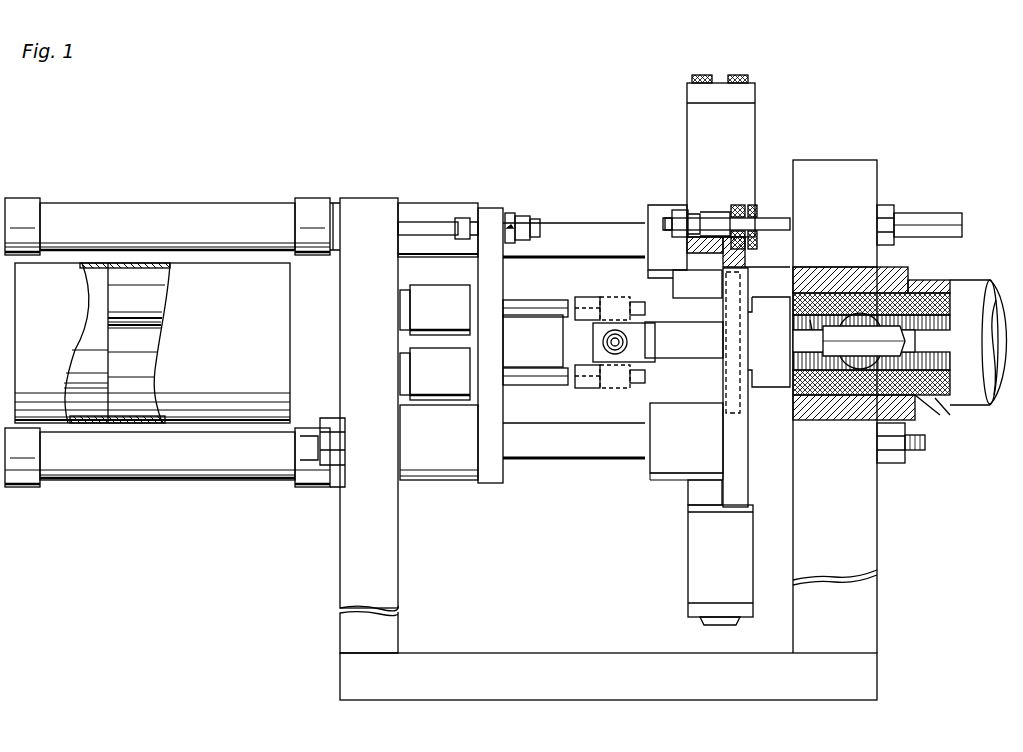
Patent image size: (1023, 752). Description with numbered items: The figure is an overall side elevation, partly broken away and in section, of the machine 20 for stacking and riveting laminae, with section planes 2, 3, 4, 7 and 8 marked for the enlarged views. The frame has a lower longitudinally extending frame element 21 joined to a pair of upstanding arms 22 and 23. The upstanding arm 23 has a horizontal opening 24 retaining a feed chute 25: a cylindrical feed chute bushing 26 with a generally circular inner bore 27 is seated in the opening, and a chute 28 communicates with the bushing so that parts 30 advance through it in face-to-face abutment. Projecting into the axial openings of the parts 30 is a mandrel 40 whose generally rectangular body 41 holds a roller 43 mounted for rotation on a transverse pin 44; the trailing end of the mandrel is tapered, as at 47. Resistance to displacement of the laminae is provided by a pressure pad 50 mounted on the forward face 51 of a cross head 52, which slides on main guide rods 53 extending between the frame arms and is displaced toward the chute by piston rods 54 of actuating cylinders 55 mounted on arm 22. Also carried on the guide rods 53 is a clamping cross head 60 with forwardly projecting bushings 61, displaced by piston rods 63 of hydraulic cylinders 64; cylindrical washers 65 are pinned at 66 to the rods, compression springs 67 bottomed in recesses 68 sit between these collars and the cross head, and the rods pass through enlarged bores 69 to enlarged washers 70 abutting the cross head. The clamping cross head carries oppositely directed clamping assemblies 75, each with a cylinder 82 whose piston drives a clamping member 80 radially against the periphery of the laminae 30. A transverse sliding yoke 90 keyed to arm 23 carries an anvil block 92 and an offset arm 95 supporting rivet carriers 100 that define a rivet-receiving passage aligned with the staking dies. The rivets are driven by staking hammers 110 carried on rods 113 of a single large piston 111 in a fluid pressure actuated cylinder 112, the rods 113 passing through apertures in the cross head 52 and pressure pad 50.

The machine 20 is at (340, 196).
The lower longitudinally extending frame element 21 is at (514, 662).
The upstanding arm 22 is at (385, 583).
The upstanding arm 23 is at (877, 528).
The horizontal opening 24 is at (838, 398).
The feed chute 25 is at (922, 272).
The feed chute bushing 26 is at (850, 400).
The inner bore 27 is at (915, 278).
The chute 28 is at (950, 280).
The parts 30 is at (950, 415).
The mandrel 40 is at (915, 348).
The mandrel body 41 is at (805, 340).
The roller 43 is at (812, 326).
The transverse pin 44 is at (864, 341).
The tapered trailing end 47 is at (905, 330).
The pressure pad 50 is at (545, 362).
The forward face 51 is at (503, 280).
The cross head 52 is at (490, 205).
The main guide rods 53 is at (615, 225).
The piston rods 54 is at (440, 210).
The actuating cylinders 55 is at (222, 198).
The clamping cross head 60 is at (752, 472).
The forwardly projecting bushings 61 is at (648, 272).
The piston rods 63 is at (775, 226).
The hydraulic cylinders 64 is at (932, 222).
The cylindrical washers 65 is at (752, 212).
The pin 66 is at (790, 223).
The compression springs 67 is at (755, 203).
The recesses 68 is at (720, 203).
The enlarged bores 69 is at (697, 217).
The enlarged washers 70 is at (683, 213).
The clamping assemblies 75 is at (758, 128).
The clamping member 80 is at (688, 300).
The cylinder 82 is at (697, 107).
The transverse sliding yoke 90 is at (667, 388).
The anvil block 92 is at (745, 342).
The offset arm 95 is at (611, 342).
The rivet carriers 100 is at (612, 297).
The staking hammers 110 is at (520, 318).
The piston 111 is at (97, 338).
The fluid pressure actuated cylinder 112 is at (258, 344).
The rods 113 is at (155, 306).
The section plane 2— 2 is at (790, 275).
The section plane 3— 3 is at (643, 505).
The section plane 4— 4 is at (572, 500).
The section plane 7— 7 is at (403, 212).
The section plane 8— 8 is at (174, 200).